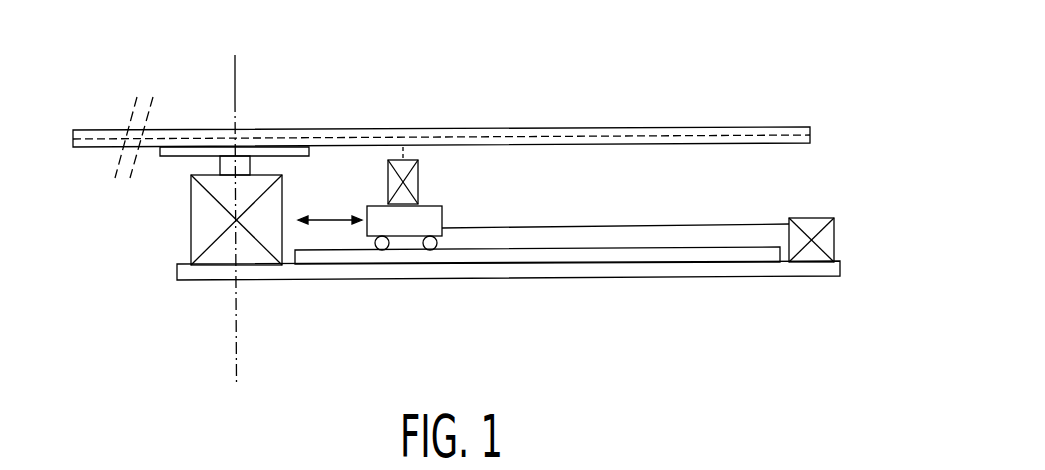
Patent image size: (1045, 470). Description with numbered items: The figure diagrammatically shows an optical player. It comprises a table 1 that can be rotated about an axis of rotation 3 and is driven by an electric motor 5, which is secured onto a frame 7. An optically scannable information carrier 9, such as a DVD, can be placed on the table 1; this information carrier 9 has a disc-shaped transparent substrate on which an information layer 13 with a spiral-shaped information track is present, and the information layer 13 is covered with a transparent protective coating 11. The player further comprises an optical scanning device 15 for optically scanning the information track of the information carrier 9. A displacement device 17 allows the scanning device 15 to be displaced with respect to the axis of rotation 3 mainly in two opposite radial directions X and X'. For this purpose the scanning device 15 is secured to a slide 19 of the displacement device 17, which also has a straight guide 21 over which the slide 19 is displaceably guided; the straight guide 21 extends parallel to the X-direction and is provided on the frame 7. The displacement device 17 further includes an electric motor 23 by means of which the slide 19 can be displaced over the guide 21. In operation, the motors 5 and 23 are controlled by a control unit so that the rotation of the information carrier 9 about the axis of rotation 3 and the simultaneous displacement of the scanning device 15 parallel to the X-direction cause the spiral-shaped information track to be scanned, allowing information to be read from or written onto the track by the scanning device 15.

The table 1 is at (188, 147).
The axis of rotation 3 is at (235, 70).
The electric motor 5 is at (200, 221).
The frame 7 is at (527, 278).
The optically scannable information carrier 9 is at (441, 97).
The transparent protective coating 11 is at (584, 147).
The information layer 13 is at (538, 135).
The optical scanning device 15 is at (418, 183).
The displacement device 17 is at (560, 244).
The slide 19 is at (432, 213).
The straight guide 21 is at (631, 252).
The electric motor 23 is at (812, 220).